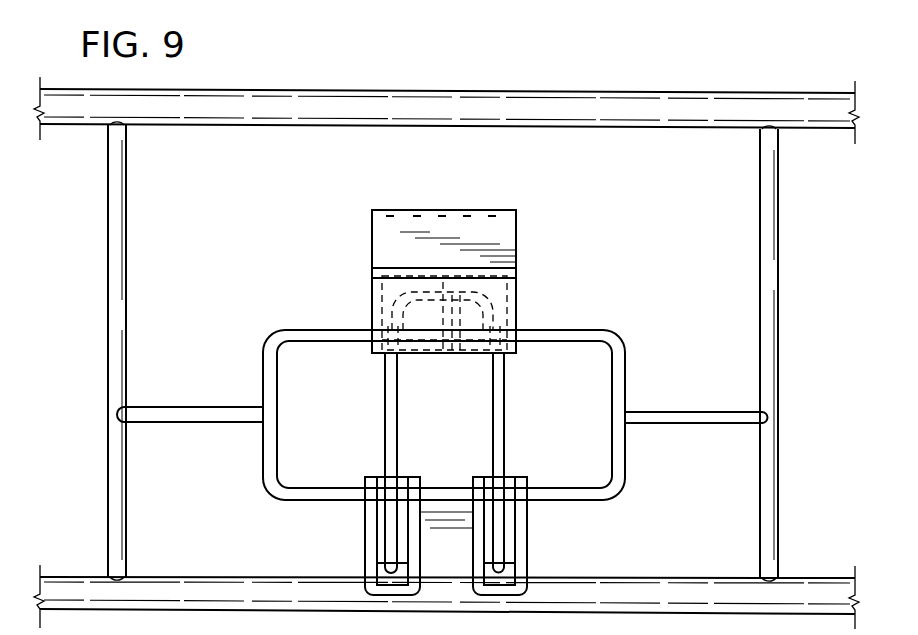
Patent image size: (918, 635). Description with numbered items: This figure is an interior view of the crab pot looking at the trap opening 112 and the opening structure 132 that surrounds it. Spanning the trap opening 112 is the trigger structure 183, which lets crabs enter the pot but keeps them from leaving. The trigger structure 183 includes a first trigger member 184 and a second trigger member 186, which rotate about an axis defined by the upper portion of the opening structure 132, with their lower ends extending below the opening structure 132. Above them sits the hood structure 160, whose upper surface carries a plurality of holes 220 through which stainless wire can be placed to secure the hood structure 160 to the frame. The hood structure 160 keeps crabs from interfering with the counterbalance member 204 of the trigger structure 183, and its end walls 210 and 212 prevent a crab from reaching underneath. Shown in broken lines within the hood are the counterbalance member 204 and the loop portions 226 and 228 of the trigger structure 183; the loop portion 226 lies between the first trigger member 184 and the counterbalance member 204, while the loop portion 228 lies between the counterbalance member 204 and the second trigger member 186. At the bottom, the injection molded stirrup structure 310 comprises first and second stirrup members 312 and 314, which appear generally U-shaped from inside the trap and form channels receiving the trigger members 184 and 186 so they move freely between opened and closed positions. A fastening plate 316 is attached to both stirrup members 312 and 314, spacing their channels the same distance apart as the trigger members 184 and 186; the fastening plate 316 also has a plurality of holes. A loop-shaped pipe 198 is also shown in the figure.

The trap opening 112 is at (583, 402).
The opening structure 132 is at (623, 397).
The hood structure 160 is at (505, 228).
The trigger structure 183 is at (378, 394).
The first trigger member 184 is at (388, 425).
The second trigger member 186 is at (500, 416).
The loop pipe 198 is at (592, 330).
The counterbalance member 204 is at (500, 290).
The end wall 210 is at (378, 288).
The end wall 212 is at (503, 302).
The holes 220 is at (392, 214).
The loop portion 226 is at (380, 308).
The loop portion 228 is at (505, 330).
The stirrup structure 310 is at (357, 551).
The first stirrup member 312 is at (370, 518).
The second stirrup member 314 is at (525, 518).
The fastening plate 316 is at (462, 520).